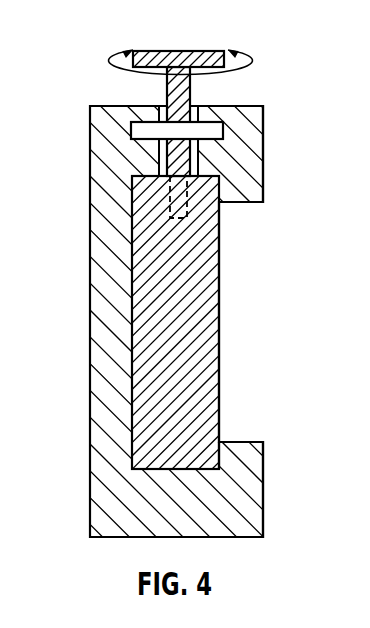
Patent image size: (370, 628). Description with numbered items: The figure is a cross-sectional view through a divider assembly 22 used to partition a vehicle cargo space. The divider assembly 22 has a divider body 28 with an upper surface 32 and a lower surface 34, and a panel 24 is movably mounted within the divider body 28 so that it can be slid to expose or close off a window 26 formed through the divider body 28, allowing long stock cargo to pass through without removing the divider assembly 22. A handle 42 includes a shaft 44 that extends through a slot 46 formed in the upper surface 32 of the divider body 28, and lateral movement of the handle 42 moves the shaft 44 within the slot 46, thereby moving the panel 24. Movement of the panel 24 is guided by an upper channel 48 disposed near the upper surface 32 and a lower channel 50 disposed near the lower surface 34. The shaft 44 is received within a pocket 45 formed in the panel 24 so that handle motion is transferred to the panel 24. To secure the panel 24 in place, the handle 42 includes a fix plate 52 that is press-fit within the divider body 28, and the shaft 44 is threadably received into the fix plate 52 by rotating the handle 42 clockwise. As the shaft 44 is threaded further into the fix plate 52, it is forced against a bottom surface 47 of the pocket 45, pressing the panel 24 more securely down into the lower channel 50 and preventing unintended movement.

The divider assembly 22 is at (272, 50).
The panel 24 is at (148, 327).
The window 26 is at (250, 313).
The divider body 28 is at (113, 268).
The upper surface 32 is at (113, 130).
The lower surface 34 is at (218, 512).
The handle 42 is at (156, 50).
The shaft 44 is at (191, 103).
The pocket 45 is at (190, 193).
The slot 46 is at (160, 150).
The bottom surface 47 is at (180, 219).
The upper channel 48 is at (222, 190).
The lower channel 50 is at (219, 455).
The fix plate 52 is at (224, 130).